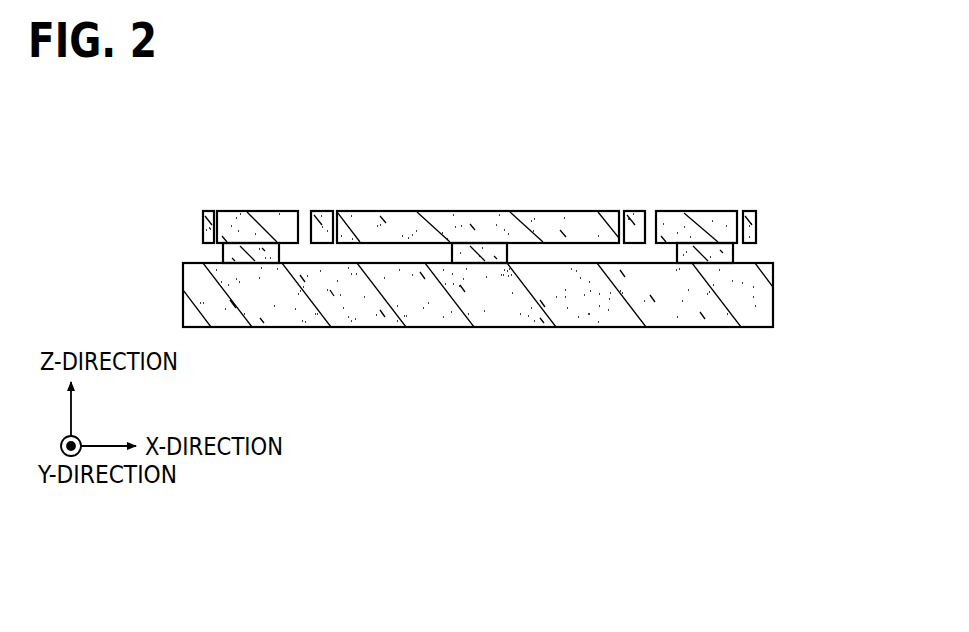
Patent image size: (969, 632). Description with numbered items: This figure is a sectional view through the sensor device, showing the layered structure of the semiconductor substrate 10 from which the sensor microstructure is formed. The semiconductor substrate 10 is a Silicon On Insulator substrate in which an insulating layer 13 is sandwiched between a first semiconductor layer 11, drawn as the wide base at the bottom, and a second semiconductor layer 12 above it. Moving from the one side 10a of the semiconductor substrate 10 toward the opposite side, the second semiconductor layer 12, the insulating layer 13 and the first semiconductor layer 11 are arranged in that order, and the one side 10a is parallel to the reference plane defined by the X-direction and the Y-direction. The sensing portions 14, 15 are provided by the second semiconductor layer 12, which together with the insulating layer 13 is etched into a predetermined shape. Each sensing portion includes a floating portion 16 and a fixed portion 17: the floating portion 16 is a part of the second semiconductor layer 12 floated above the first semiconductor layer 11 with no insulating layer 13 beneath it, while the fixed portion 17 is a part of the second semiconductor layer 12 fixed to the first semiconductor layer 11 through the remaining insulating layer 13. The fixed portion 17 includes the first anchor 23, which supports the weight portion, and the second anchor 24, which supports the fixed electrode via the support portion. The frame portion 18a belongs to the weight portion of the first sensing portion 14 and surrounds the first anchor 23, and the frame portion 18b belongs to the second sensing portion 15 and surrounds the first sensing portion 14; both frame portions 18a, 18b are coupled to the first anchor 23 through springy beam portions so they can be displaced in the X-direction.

The semiconductor substrate 10 is at (489, 239).
The one side 10a is at (203, 211).
The first semiconductor layer 11 is at (755, 287).
The second semiconductor layer 12 is at (465, 197).
The insulating layer 13 is at (724, 255).
The first sensing portion 14 is at (598, 209).
The second sensing portion 15 is at (729, 209).
The floating portion 16 is at (630, 218).
The fixed portion 17 is at (685, 217).
The frame portion 18a is at (318, 218).
The frame portion 18b is at (748, 215).
The first anchor 23 is at (473, 218).
The second anchor 24 is at (267, 218).